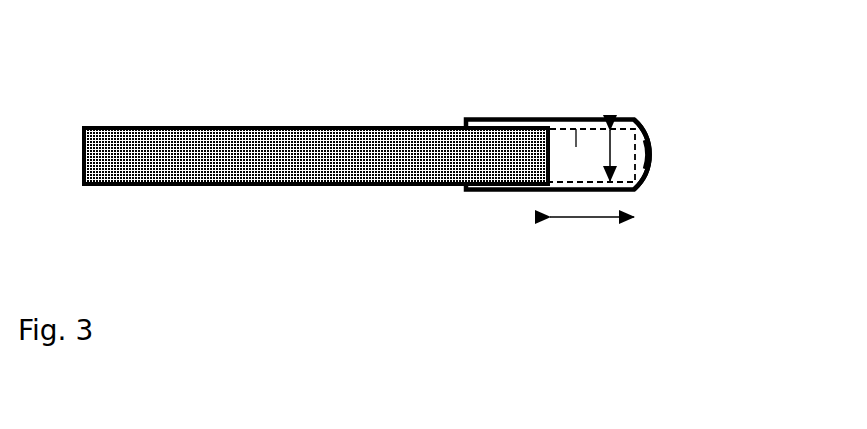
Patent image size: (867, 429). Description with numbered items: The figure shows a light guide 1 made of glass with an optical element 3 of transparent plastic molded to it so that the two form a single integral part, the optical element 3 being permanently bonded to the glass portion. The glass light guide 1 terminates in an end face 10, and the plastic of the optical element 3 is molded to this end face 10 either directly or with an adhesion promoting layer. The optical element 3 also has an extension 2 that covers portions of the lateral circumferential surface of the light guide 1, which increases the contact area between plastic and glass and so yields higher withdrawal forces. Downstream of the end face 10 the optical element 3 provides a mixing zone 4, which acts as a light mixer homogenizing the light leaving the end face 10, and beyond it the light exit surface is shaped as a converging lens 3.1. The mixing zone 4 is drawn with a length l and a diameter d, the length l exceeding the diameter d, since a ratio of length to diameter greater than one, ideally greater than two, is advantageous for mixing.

The light guide 1 is at (285, 150).
The extension 2 is at (493, 117).
The optical element 3 is at (640, 124).
The converging lens 3.1 is at (650, 153).
The mixing zone 4 is at (576, 129).
The end face 10 is at (549, 122).
The diameter d is at (613, 145).
The length l is at (592, 236).